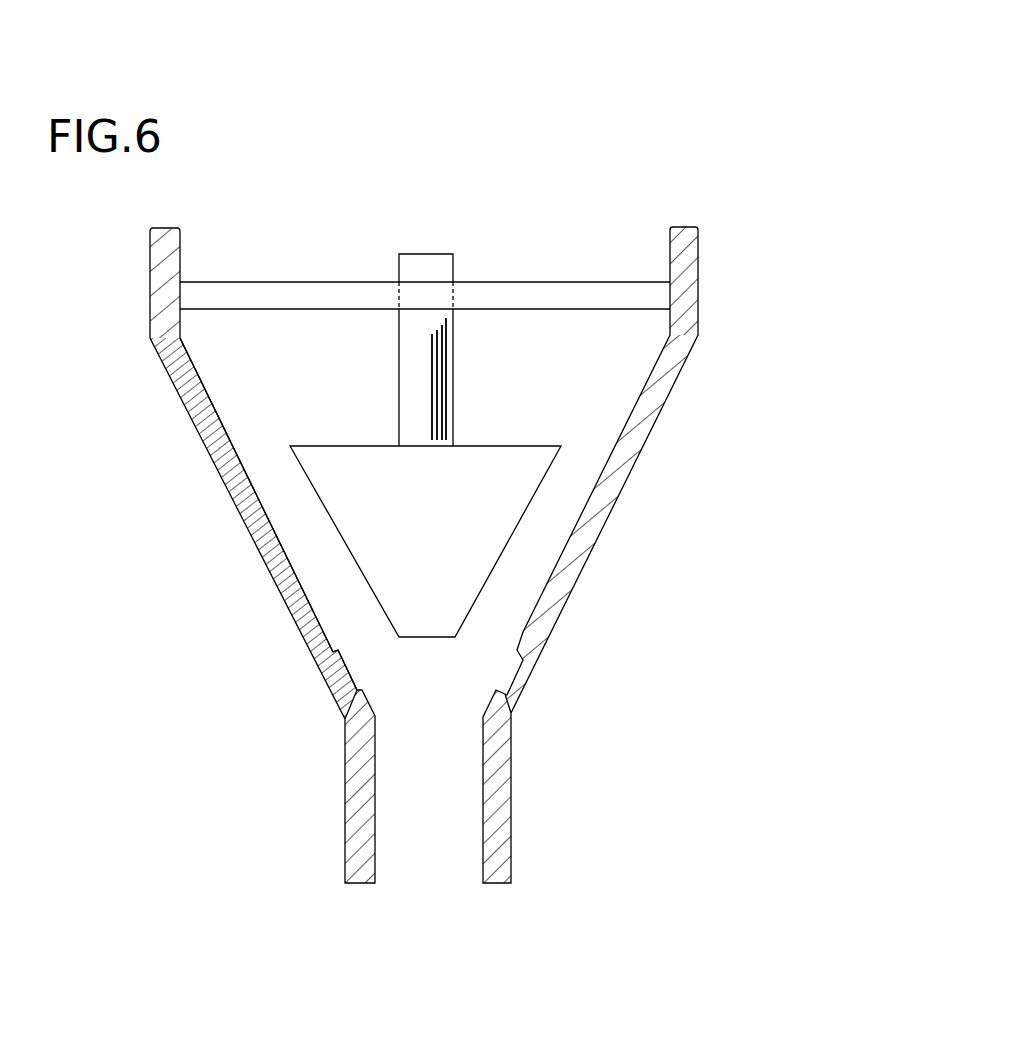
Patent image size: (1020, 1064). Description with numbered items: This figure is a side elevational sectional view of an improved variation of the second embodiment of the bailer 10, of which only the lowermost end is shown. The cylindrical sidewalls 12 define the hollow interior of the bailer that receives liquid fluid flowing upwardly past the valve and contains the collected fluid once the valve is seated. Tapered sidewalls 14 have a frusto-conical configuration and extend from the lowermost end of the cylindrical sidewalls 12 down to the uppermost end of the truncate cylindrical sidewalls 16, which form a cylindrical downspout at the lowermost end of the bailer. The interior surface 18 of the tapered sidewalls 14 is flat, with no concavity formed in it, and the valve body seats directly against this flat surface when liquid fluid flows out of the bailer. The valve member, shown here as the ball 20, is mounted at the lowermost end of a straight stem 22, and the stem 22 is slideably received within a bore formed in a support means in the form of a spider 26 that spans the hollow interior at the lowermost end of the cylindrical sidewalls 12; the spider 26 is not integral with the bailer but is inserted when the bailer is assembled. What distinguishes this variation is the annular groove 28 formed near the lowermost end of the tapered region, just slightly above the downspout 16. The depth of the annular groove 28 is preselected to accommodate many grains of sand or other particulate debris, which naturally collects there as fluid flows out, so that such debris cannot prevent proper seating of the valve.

The bailer 10 is at (658, 108).
The cylindrical sidewalls 12 is at (698, 265).
The tapered sidewalls 14 is at (180, 393).
The truncate cylindrical sidewalls 16 is at (346, 788).
The interior surface 18 is at (232, 445).
The hemispherical ball 20 is at (508, 446).
The stem 22 is at (453, 334).
The spider 26 is at (289, 282).
The annular groove 28 is at (336, 668).